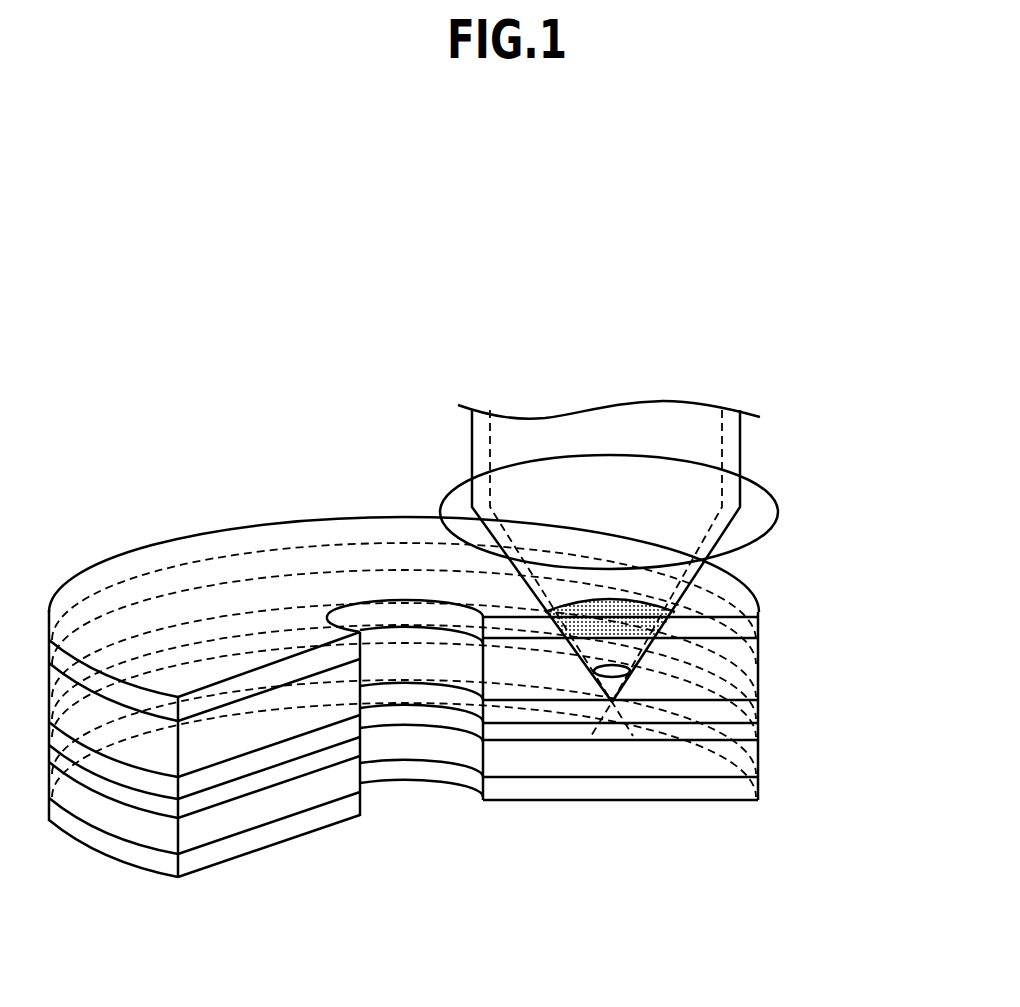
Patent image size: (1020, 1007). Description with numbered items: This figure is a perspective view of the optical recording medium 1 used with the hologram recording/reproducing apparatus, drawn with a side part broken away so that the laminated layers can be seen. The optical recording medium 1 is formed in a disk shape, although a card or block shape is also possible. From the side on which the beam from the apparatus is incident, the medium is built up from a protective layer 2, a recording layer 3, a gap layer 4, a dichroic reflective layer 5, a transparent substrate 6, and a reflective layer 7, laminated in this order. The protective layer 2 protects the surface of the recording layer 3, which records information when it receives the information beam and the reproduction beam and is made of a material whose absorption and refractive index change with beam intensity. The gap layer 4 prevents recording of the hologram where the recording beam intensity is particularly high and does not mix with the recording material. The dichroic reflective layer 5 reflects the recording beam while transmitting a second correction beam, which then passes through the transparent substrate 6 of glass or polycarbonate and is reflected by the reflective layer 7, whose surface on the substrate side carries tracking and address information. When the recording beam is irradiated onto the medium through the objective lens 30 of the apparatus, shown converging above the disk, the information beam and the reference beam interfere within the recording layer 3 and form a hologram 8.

The optical recording medium 1 is at (155, 490).
The protective layer 2 is at (760, 622).
The recording layer 3 is at (753, 673).
The gap layer 4 is at (758, 708).
The dichroic reflective layer 5 is at (758, 732).
The transparent substrate 6 is at (752, 755).
The reflective layer 7 is at (760, 790).
The hologram 8 is at (612, 702).
The objective lens 30 is at (760, 517).